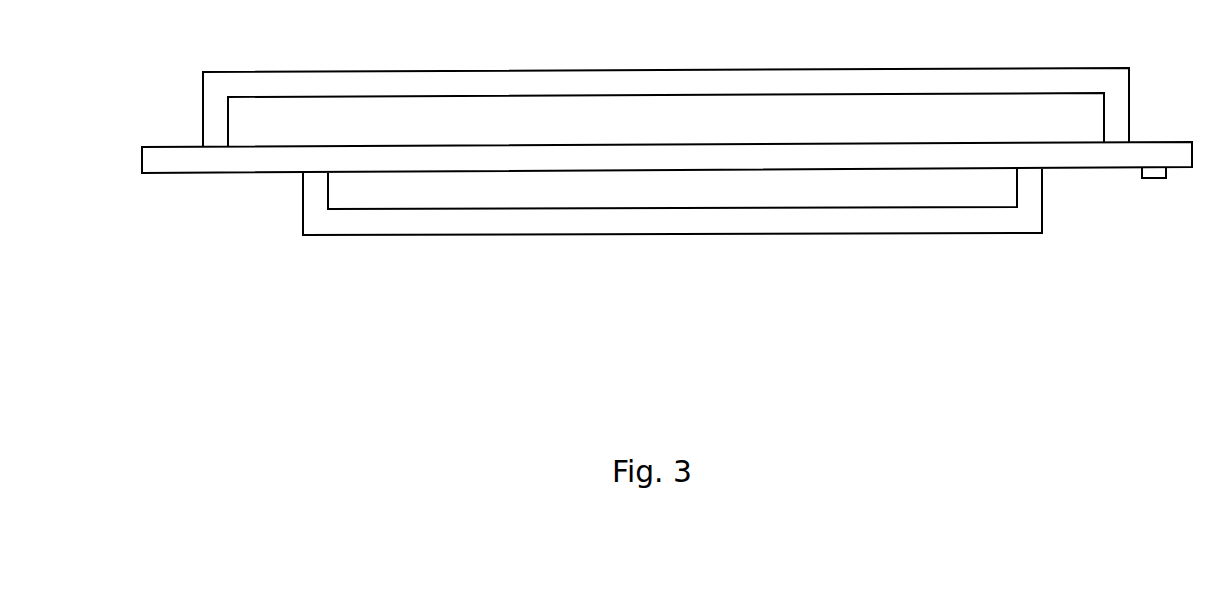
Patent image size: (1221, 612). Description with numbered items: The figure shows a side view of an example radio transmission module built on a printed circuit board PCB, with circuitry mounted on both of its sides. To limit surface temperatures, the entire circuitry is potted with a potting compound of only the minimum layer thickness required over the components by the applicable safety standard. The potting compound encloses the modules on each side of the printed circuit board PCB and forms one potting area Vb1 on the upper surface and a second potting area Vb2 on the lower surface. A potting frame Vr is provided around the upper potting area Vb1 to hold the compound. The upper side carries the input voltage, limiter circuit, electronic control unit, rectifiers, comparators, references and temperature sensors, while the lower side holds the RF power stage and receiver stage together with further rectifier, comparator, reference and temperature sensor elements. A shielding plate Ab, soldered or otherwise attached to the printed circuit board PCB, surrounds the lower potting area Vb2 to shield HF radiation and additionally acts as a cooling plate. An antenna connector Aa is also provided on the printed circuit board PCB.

The printed circuit board PCB is at (242, 160).
The potting frame Vr is at (306, 70).
The potting area Vb1 is at (578, 82).
The shielding plate Ab is at (380, 237).
The potting area Vb2 is at (580, 220).
The antenna connector Aa is at (1157, 179).